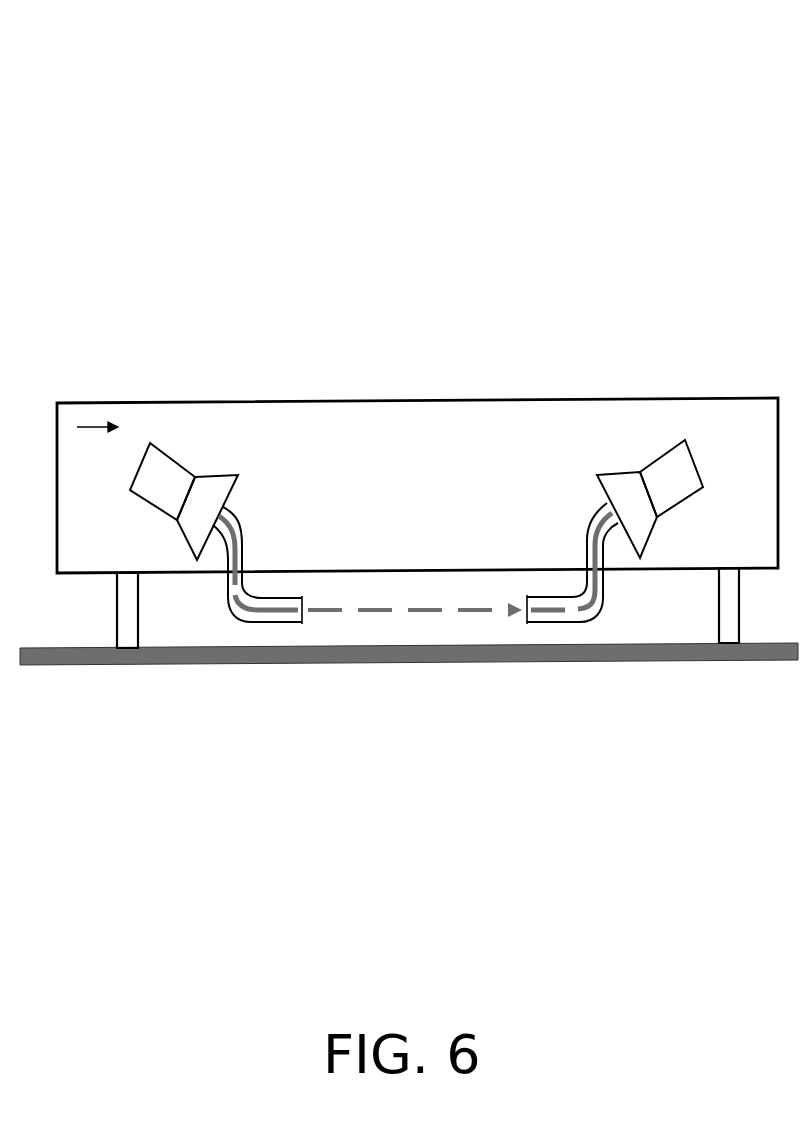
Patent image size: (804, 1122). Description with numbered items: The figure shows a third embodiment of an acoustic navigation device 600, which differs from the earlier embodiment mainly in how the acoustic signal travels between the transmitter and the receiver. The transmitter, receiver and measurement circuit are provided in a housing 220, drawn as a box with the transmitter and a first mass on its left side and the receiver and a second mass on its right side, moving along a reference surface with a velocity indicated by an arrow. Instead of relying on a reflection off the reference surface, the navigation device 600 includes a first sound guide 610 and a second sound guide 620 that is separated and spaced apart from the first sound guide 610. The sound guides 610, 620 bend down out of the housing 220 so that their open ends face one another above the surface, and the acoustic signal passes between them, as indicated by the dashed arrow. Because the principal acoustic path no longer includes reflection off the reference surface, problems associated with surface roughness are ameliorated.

The acoustic navigation device 600 is at (747, 28).
The housing 220 is at (175, 392).
The first sound guide 610 is at (270, 636).
The second sound guide 620 is at (549, 636).